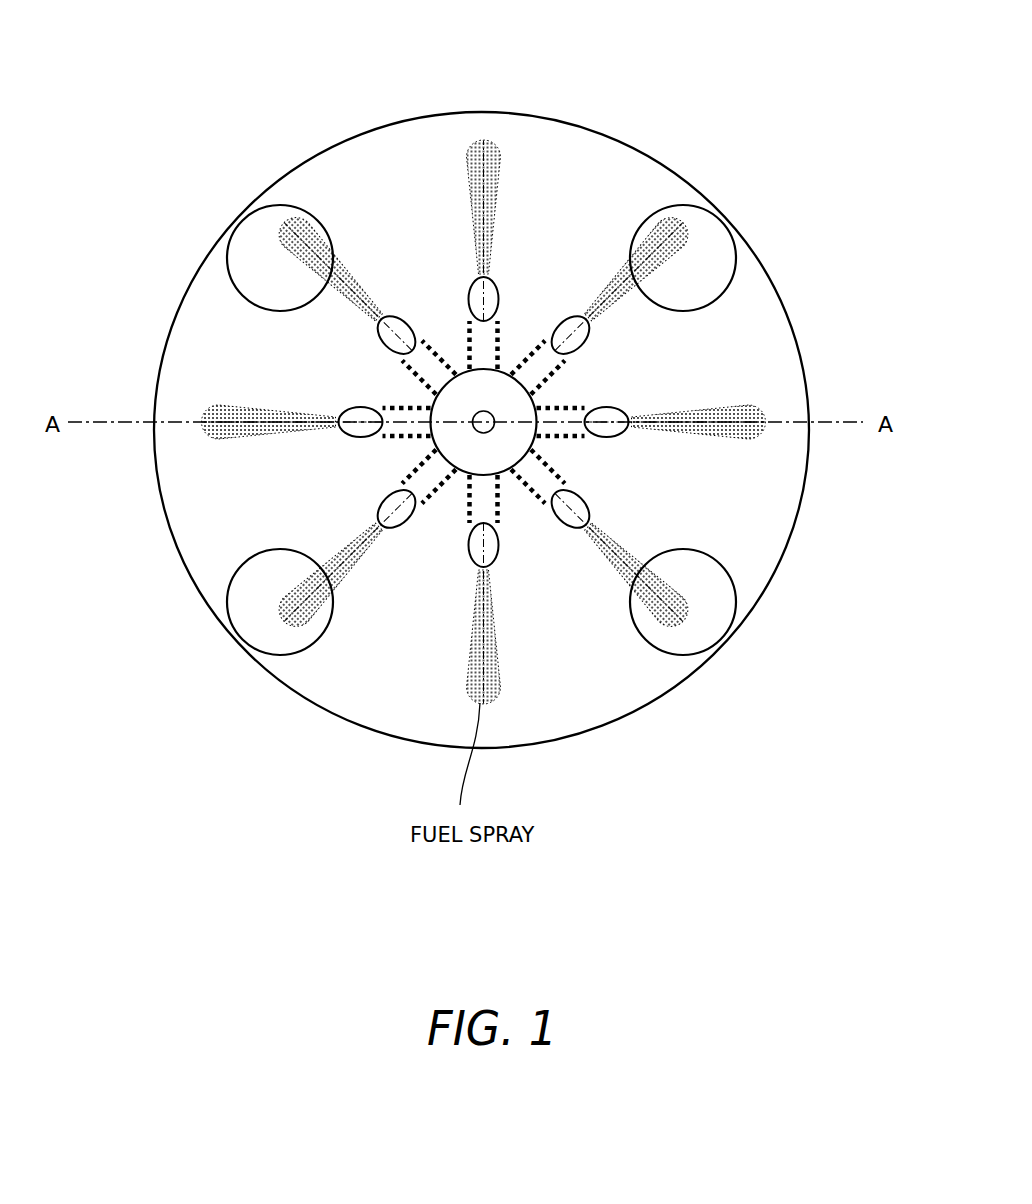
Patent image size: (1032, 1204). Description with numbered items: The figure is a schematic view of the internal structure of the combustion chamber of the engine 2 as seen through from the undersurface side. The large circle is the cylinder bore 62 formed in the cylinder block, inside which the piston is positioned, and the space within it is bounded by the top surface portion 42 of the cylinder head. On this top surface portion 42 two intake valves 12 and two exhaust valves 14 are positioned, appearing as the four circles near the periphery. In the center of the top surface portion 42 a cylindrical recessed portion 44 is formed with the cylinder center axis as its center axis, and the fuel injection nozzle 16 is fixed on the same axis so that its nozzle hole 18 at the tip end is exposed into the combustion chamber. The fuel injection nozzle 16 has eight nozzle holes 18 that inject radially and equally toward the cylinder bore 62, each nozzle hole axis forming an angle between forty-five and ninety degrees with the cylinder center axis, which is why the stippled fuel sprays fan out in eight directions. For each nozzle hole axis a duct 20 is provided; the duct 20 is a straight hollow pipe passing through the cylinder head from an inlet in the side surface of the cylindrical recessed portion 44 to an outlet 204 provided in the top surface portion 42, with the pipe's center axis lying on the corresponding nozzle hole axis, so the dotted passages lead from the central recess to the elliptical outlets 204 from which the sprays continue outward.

The engine 2 is at (740, 107).
The intake valve 12 is at (262, 253).
The exhaust valve 14 is at (720, 247).
The fuel injection nozzle 16 is at (470, 452).
The nozzle hole 18 is at (480, 415).
The duct 20 is at (575, 440).
The top surface portion 42 is at (573, 203).
The cylindrical recessed portion 44 is at (507, 470).
The cylinder bore 62 is at (547, 117).
The outlet 204 is at (617, 408).